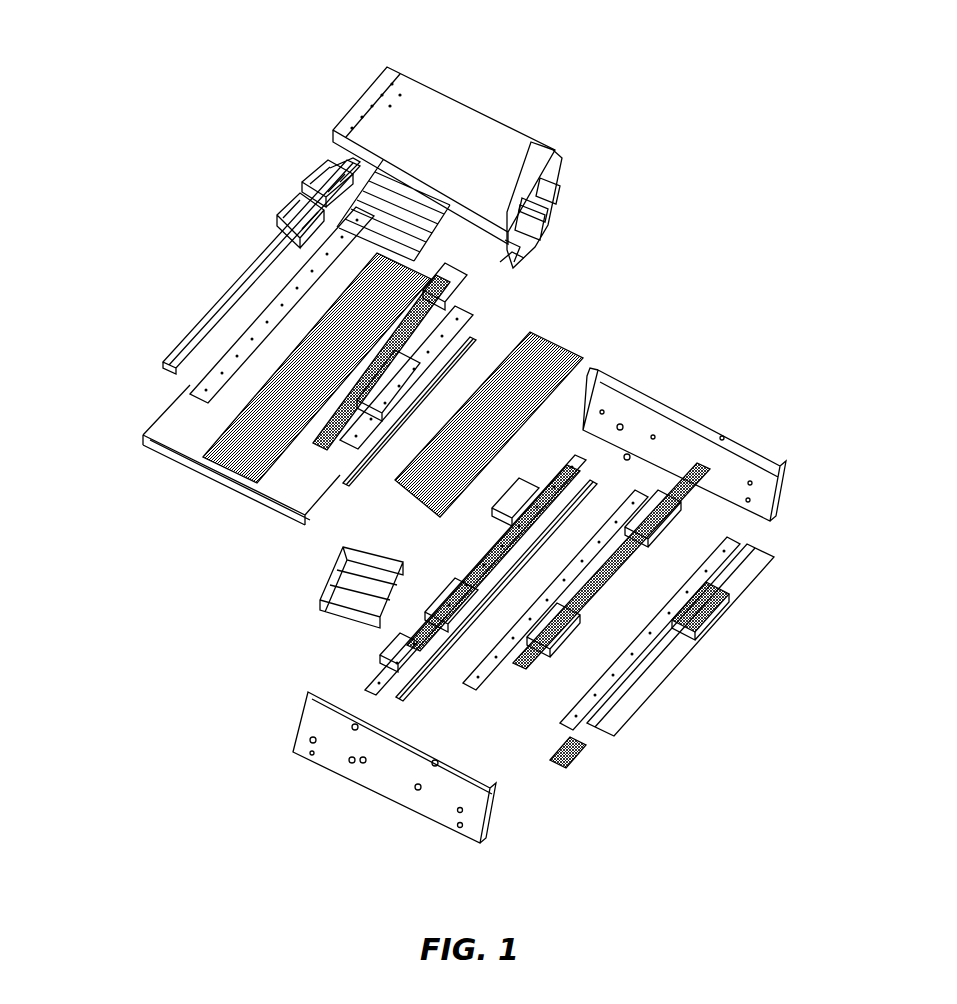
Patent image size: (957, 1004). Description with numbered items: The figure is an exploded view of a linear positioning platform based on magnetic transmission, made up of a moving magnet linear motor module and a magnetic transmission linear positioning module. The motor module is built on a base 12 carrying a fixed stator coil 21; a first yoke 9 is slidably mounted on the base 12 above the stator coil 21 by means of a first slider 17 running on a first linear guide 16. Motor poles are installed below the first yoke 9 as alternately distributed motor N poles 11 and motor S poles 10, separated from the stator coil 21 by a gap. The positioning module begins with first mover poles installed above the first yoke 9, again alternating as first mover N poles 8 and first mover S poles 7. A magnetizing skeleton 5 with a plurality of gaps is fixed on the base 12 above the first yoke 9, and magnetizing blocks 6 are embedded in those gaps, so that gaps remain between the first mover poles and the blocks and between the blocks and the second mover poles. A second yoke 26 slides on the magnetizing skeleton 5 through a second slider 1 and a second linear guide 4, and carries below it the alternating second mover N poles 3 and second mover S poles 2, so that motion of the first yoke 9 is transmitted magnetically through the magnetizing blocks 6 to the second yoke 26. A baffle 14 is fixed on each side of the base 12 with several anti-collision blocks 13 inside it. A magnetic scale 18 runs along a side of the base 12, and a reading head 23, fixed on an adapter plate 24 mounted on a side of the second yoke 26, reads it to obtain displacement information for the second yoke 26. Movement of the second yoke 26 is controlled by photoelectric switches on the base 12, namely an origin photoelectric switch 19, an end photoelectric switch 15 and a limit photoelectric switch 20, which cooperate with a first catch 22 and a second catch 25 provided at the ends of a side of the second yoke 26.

The second slider 1 is at (317, 182).
The second mover S pole 2 is at (290, 196).
The second mover N pole 3 is at (373, 227).
The second linear guide 4 is at (260, 260).
The magnetizing skeleton 5 is at (268, 310).
The magnetizing block 6 is at (283, 367).
The first mover S pole 7 is at (397, 485).
The first mover N pole 8 is at (360, 507).
The first yoke 9 is at (333, 510).
The motor S pole 10 is at (353, 585).
The motor N pole 11 is at (343, 600).
The base 12 is at (387, 647).
The anti-collision block 13 is at (398, 695).
The baffle 14 is at (455, 788).
The end photoelectric switch 15 is at (562, 731).
The first linear guide 16 is at (588, 654).
The first slider 17 is at (560, 613).
The magnetic scale 18 is at (643, 613).
The origin photoelectric switch 19 is at (707, 575).
The limit photoelectric switch 20 is at (680, 597).
The stator coil 21 is at (570, 545).
The first catch 22 is at (512, 252).
The reading head 23 is at (533, 226).
The adapter plate 24 is at (533, 207).
The second catch 25 is at (553, 190).
The second yoke 26 is at (513, 150).